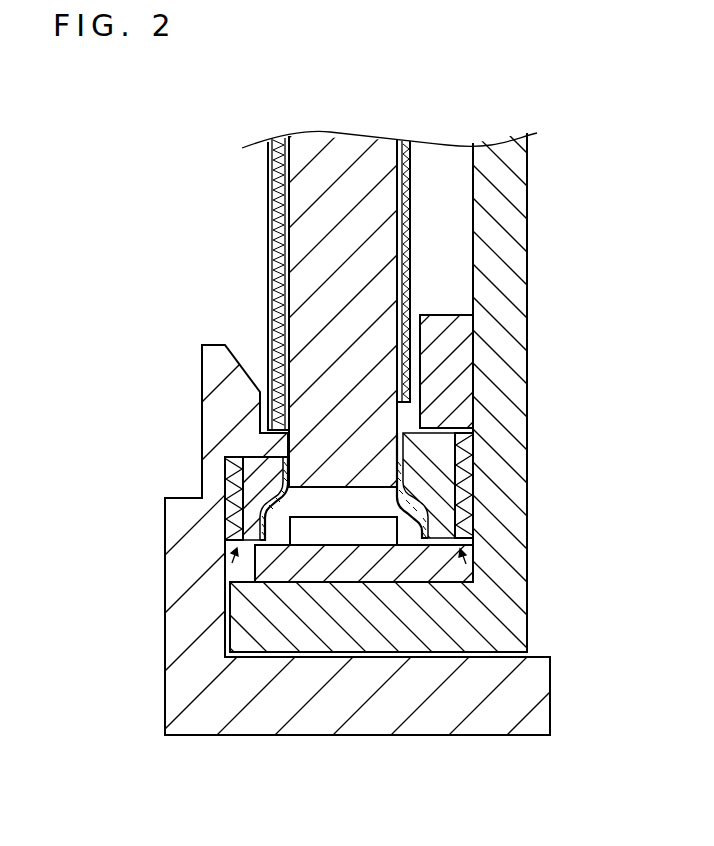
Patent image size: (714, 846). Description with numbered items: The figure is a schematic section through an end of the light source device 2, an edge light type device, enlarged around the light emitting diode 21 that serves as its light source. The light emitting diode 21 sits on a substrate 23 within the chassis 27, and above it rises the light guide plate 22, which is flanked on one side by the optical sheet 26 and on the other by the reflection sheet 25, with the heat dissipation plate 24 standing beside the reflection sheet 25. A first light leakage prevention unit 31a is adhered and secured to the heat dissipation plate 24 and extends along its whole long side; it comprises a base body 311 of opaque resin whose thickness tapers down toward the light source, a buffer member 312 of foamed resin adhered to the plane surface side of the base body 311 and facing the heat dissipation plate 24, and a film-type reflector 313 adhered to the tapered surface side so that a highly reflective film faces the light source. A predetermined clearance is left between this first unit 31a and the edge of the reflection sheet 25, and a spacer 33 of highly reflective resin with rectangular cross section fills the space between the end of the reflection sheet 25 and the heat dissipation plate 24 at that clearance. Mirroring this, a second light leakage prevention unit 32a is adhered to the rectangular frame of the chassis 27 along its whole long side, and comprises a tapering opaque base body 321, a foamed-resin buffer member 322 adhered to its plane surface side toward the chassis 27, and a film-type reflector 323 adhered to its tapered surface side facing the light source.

The light source device 2 is at (135, 185).
The light emitting diode 21 is at (340, 547).
The light guide plate 22 is at (348, 143).
The substrate 23 is at (406, 565).
The heat dissipation plate 24 is at (515, 390).
The reflection sheet 25 is at (408, 160).
The optical sheet 26 is at (268, 198).
The chassis 27 is at (255, 720).
The first light leakage prevention unit 31a is at (466, 565).
The base body 311 is at (440, 490).
The buffer member 312 is at (465, 465).
The reflector 313 is at (427, 530).
The second light leakage prevention unit 32a is at (233, 562).
The base body 321 is at (250, 508).
The buffer member 322 is at (237, 474).
The reflector 323 is at (260, 530).
The spacer 33 is at (468, 338).